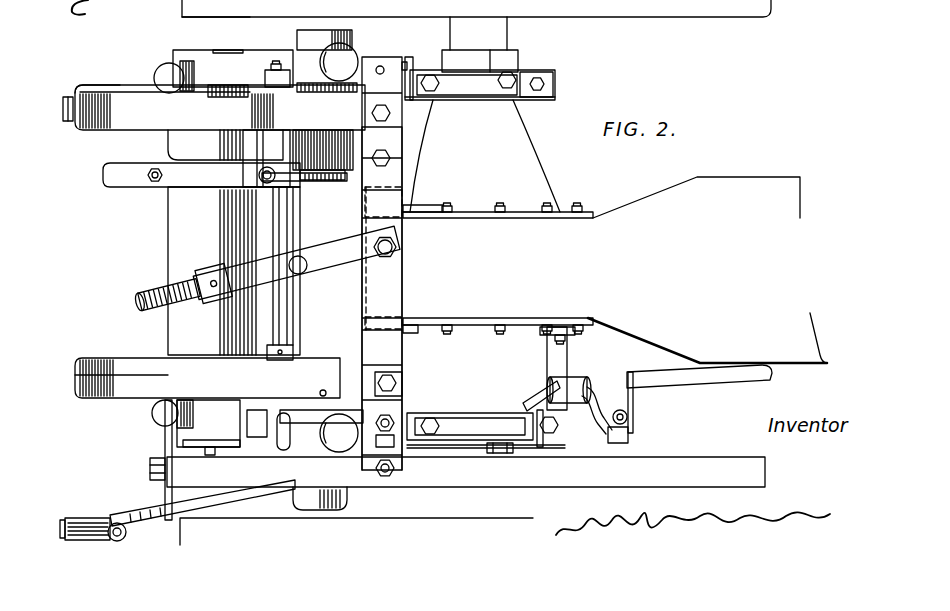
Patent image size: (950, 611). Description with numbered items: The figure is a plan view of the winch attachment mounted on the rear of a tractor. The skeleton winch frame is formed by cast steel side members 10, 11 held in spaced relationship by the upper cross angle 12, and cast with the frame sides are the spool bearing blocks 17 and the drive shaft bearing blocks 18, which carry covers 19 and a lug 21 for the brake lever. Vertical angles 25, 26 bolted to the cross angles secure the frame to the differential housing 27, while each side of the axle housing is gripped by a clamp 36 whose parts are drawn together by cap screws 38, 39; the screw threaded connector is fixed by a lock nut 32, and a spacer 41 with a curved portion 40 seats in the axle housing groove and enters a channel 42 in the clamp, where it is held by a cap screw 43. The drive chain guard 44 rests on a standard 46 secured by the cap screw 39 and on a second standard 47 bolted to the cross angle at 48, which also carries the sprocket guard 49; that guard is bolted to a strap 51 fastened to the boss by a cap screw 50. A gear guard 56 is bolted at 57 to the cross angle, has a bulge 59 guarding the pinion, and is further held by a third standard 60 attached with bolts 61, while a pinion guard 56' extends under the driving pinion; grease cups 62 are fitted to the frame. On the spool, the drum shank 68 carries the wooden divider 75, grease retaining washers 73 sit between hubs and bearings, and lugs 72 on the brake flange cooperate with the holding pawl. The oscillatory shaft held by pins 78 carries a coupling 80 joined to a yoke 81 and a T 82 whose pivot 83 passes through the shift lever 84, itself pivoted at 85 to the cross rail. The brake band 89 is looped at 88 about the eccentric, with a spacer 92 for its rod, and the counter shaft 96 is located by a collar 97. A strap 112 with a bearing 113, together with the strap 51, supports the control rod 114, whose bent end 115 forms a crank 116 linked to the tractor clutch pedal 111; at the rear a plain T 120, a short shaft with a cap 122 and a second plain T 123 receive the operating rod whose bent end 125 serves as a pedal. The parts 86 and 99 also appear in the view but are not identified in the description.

The base bar 10 is at (233, 400).
The carriage block 11 is at (252, 62).
The plate 12 is at (412, 350).
The rod 17 is at (190, 58).
The block 18 is at (352, 42).
The plate 19 is at (219, 50).
The block 21 is at (270, 70).
The plate 25 is at (410, 206).
The lower plate 26 is at (412, 326).
The upper plate 27 is at (533, 237).
The post 32 is at (410, 58).
The bracket channel 36 is at (462, 88).
The bolt 38 is at (432, 76).
The bolt 39 is at (553, 83).
The bracket 40 is at (518, 53).
The nut 41 is at (508, 92).
The skirt 42 is at (486, 101).
The bolt 43 is at (516, 70).
The bottom plate 44 is at (558, 460).
The plate 46 is at (563, 459).
The bolt 47 is at (412, 454).
The plate 48 is at (408, 400).
The frame 49 is at (285, 479).
The nut 50 is at (150, 468).
The bar 51 is at (177, 508).
The upper bar 56 is at (220, 120).
The bar 56' is at (399, 146).
The nut 57 is at (390, 112).
The block 59 is at (233, 135).
The link 60 is at (107, 88).
The pin 61 is at (68, 122).
The knob 62 is at (155, 73).
The column 68 is at (173, 240).
The bracket 72 is at (280, 147).
The cylinder 73 is at (300, 94).
The link bar 75 is at (120, 180).
The ball 78 is at (286, 76).
The screw 80 is at (277, 203).
The rod 81 is at (262, 177).
The shaft 82 is at (273, 252).
The pin 83 is at (300, 268).
The block 84 is at (230, 274).
The nut 85 is at (398, 247).
The block 86 is at (270, 402).
The bracket 88 is at (293, 353).
The lower bar 89 is at (83, 380).
The nut 92 is at (405, 336).
The plate 96 is at (338, 297).
The bolt 97 is at (290, 390).
The block 99 is at (350, 152).
The rod 111 is at (712, 384).
The bracket 112 is at (566, 352).
The cylinder 113 is at (580, 382).
The rod 114 is at (527, 400).
The link 115 is at (608, 397).
The ring 116 is at (640, 413).
The ring 120 is at (128, 539).
The pin 122 is at (66, 540).
The cylinder 123 is at (83, 519).
The hook 125 is at (70, 16).